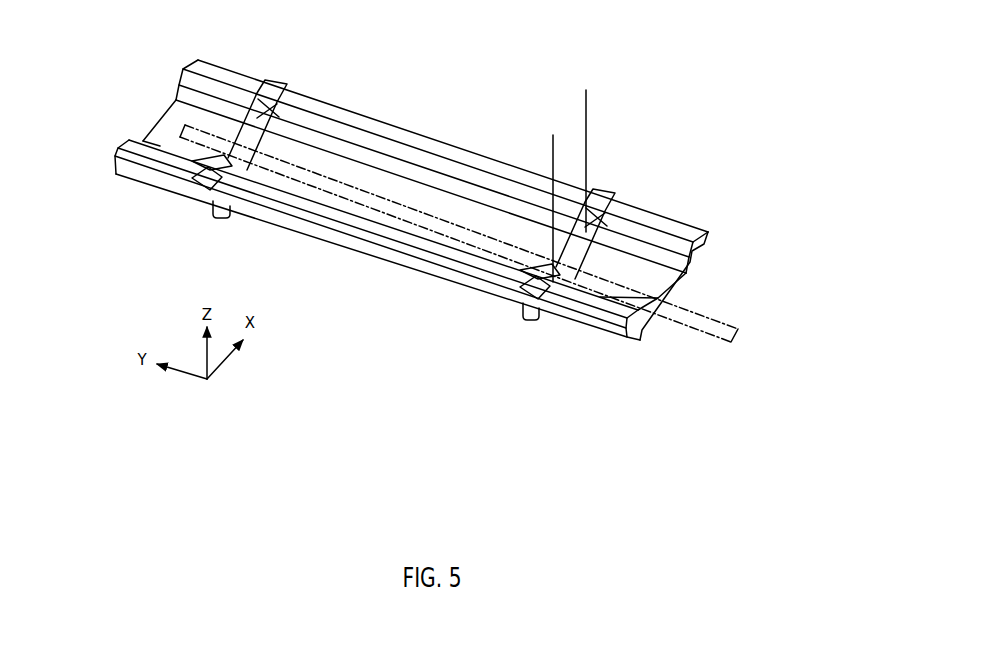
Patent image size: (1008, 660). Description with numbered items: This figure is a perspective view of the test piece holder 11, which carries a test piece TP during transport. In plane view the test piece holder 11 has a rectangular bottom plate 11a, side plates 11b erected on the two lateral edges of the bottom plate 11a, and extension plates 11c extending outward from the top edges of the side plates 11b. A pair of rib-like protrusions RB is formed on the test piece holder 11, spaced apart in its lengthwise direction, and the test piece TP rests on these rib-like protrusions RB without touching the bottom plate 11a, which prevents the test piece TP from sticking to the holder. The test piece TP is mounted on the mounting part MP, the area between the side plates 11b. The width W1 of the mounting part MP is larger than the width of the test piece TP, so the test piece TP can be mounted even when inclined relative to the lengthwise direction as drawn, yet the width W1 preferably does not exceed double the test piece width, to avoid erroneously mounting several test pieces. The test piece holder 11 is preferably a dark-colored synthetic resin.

The test piece holder 11 is at (443, 227).
The bottom plate 11a is at (684, 296).
The side plates 11b is at (690, 266).
The extension plates 11c is at (698, 221).
The rib-like protrusions RB is at (263, 103).
The test piece TP is at (693, 329).
The mounting part MP is at (417, 198).
The width of the mounting part W1 is at (584, 104).